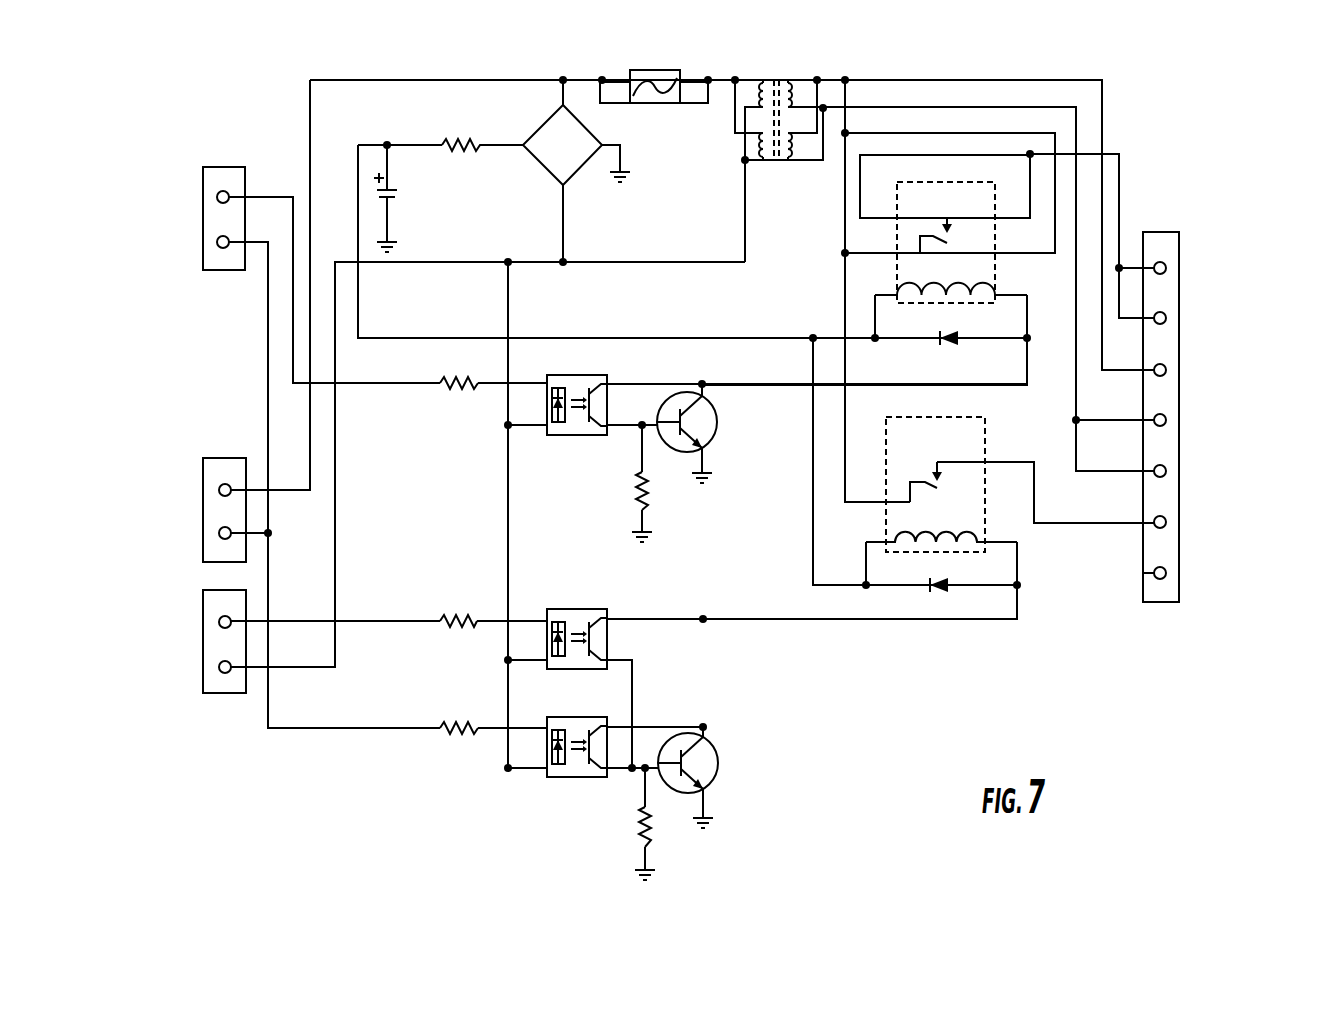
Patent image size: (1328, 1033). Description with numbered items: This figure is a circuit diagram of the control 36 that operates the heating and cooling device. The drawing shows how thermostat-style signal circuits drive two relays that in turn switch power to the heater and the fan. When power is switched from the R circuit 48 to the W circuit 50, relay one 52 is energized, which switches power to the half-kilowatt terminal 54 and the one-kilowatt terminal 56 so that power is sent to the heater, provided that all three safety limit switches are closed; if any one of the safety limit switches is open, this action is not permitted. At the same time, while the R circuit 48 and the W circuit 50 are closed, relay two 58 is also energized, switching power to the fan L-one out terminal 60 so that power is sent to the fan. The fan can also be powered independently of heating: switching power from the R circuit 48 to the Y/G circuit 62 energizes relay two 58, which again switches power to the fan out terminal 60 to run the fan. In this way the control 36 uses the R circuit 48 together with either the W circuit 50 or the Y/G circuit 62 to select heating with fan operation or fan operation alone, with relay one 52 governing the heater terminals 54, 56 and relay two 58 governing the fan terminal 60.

The control 36 is at (207, 112).
The R circuit 48 is at (177, 490).
The W circuit 50 is at (175, 537).
The relay 1 52 is at (972, 165).
The 0.5 kw terminal 54 is at (1233, 323).
The 1 kw terminal 56 is at (1228, 273).
The relay 2 58 is at (972, 403).
The fan L1 out terminal 60 is at (1253, 525).
The Y/G circuit 62 is at (165, 629).